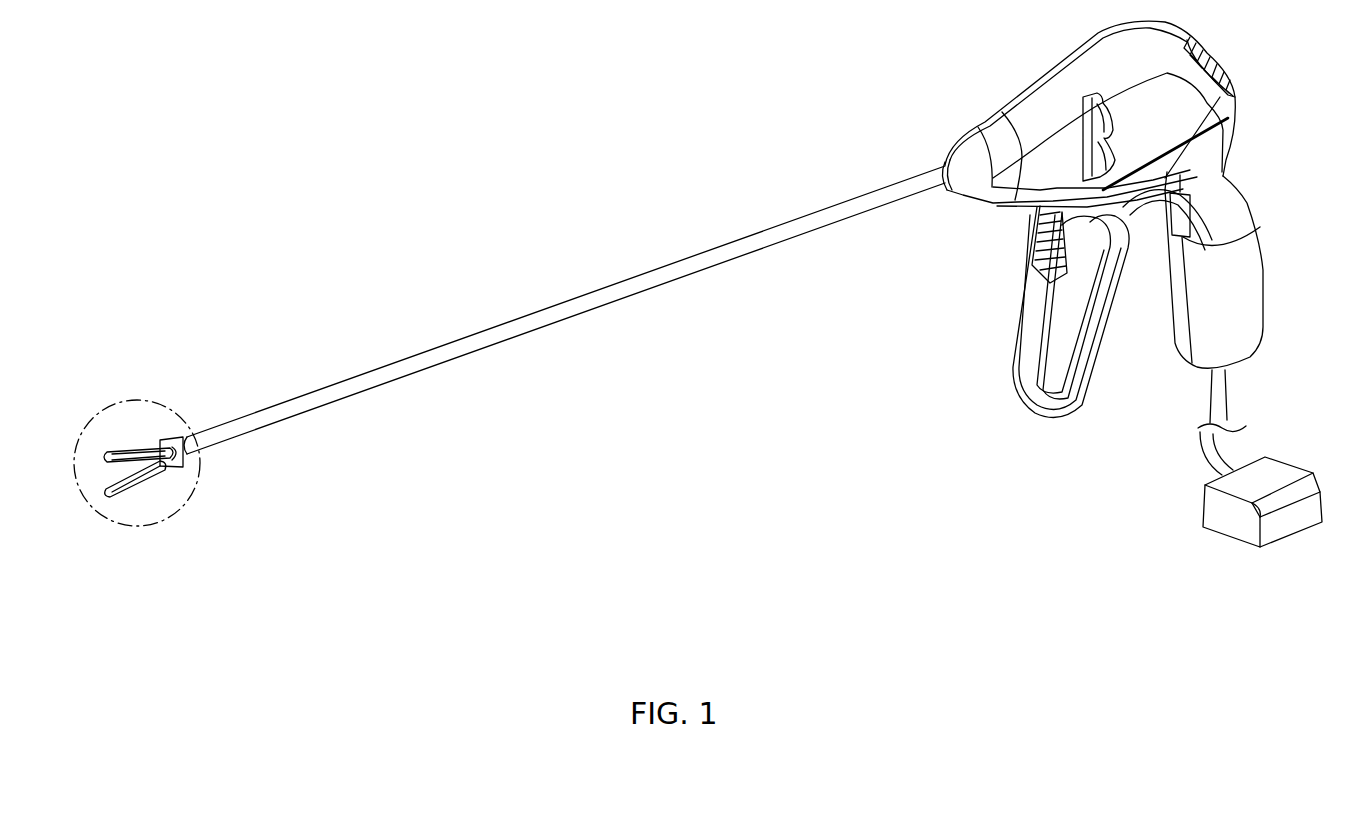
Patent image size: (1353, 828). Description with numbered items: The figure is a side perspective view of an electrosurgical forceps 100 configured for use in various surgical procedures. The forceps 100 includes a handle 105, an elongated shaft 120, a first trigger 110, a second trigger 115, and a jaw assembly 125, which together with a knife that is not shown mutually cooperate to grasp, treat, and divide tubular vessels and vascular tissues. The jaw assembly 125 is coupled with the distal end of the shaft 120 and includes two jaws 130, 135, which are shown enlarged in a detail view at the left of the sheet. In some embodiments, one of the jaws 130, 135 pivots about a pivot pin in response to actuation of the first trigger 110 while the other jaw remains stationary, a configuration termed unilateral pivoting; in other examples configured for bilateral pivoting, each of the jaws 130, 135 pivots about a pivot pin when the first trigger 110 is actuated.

The electrosurgical forceps 100 is at (500, 183).
The handle 105 is at (1240, 288).
The first trigger 110 is at (1025, 327).
The second trigger 115 is at (1042, 228).
The shaft 120 is at (470, 343).
The jaw assembly 125 is at (148, 525).
The jaw 130 is at (158, 492).
The jaw 135 is at (141, 433).